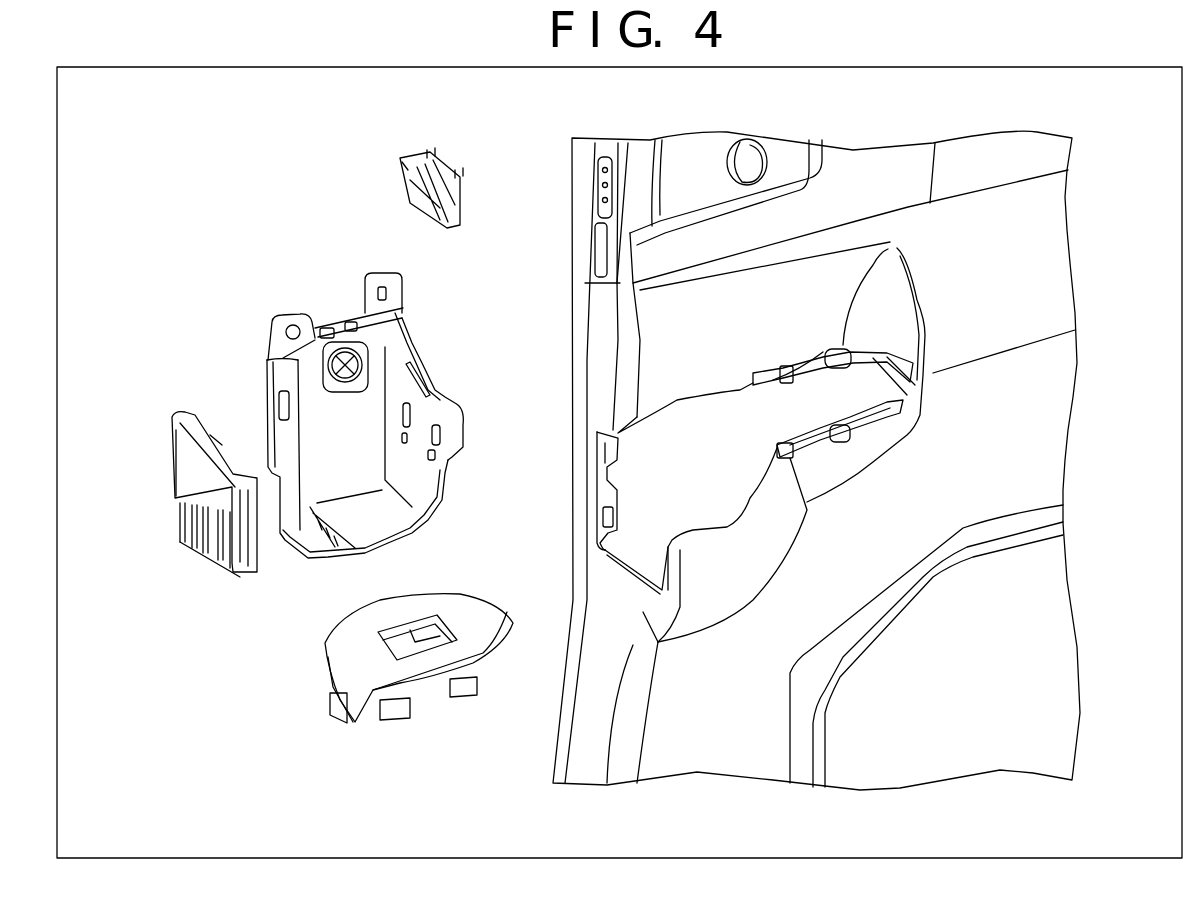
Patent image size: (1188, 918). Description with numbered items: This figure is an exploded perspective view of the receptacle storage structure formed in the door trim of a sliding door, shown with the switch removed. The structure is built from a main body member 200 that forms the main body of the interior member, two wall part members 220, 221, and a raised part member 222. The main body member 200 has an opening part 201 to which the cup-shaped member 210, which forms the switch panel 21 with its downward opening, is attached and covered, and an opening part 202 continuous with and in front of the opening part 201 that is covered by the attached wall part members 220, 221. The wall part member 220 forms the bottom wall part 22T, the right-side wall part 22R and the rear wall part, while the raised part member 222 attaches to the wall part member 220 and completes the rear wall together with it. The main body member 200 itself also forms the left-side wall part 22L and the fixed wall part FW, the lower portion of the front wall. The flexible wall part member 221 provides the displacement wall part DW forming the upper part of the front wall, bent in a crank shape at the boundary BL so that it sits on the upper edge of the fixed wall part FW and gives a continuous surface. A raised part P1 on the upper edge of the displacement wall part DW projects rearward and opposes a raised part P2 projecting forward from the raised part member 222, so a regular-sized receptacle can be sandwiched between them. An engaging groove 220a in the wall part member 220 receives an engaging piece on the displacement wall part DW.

The main body member 200 is at (853, 747).
The opening part 201 is at (867, 400).
The opening part 202 is at (643, 547).
The switch panel 21 is at (460, 652).
The cup-shaped member 210 is at (432, 690).
The wall part member 220 is at (310, 550).
The engaging groove 220a is at (267, 400).
The wall part member 221 is at (197, 548).
The raised part member 222 is at (413, 152).
The right-side wall part 22R is at (338, 340).
The left-side wall part 22L is at (722, 567).
The bottom wall part 22T is at (378, 520).
The raised part P1 is at (218, 440).
The raised part P2 is at (400, 168).
The displacement wall part DW is at (188, 478).
The boundary BL is at (178, 523).
The fixed wall part FW is at (657, 650).